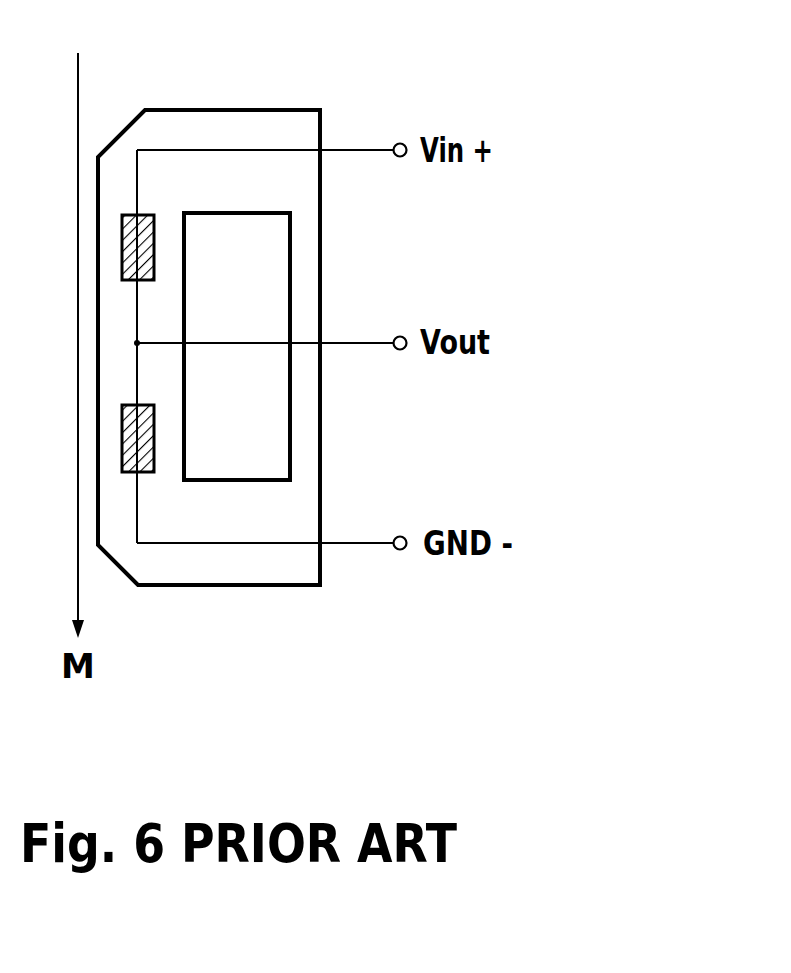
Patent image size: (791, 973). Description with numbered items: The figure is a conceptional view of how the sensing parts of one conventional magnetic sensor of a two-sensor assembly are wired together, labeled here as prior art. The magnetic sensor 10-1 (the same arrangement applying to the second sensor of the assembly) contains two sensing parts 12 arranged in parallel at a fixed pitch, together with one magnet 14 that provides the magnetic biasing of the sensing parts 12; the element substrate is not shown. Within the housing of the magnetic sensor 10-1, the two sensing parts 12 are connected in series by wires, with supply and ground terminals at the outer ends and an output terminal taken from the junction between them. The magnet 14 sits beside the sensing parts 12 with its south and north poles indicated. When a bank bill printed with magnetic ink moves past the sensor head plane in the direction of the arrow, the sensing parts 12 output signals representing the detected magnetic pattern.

The magnetic sensor 10-1 is at (273, 110).
The sensing parts 12 is at (145, 215).
The magnet 14 is at (290, 263).